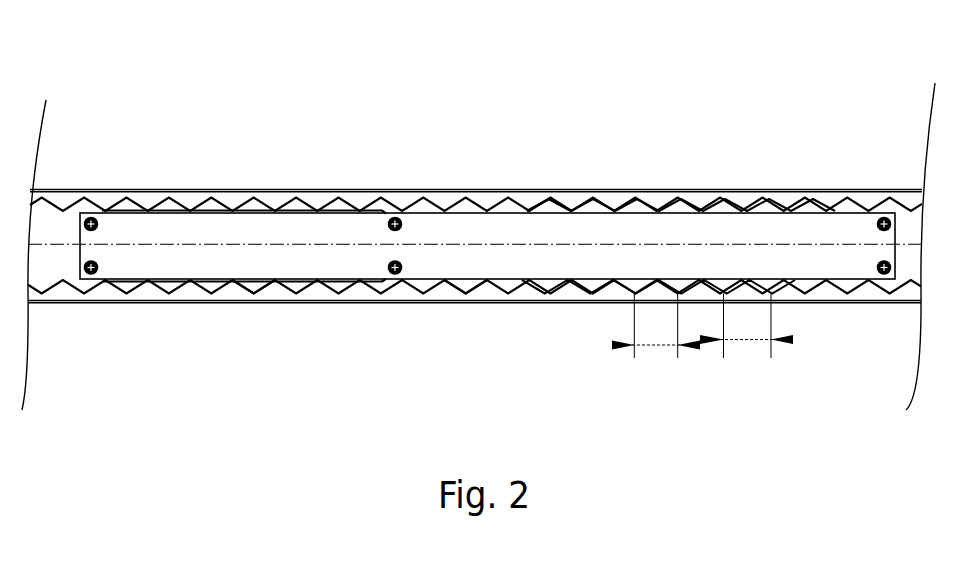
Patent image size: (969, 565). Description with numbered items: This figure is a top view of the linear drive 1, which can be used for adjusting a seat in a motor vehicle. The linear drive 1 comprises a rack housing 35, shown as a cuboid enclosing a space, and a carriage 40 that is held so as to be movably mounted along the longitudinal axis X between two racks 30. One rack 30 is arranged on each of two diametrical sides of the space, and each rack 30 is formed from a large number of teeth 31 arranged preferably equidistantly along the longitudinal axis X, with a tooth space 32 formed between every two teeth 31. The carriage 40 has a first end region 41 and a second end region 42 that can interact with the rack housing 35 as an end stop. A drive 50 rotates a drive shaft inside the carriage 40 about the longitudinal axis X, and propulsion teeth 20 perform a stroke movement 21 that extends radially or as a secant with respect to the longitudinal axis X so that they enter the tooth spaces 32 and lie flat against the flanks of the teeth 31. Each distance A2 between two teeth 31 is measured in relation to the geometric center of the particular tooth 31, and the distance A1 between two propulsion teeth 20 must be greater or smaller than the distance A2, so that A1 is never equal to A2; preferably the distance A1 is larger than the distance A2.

The linear drive 1 is at (408, 82).
The longitudinal axis X is at (337, 248).
The propulsion tooth 20 is at (540, 205).
The stroke movement 21 is at (537, 290).
The rack 30 is at (465, 203).
The tooth 31 is at (465, 284).
The tooth space 32 is at (252, 290).
The rack housing 35 is at (536, 200).
The carriage 40 is at (291, 240).
The first end region 41 is at (80, 247).
The second end region 42 is at (897, 243).
The drive 50 is at (211, 211).
The distance between two propulsion teeth A1 is at (737, 342).
The distance between two teeth A2 is at (645, 345).